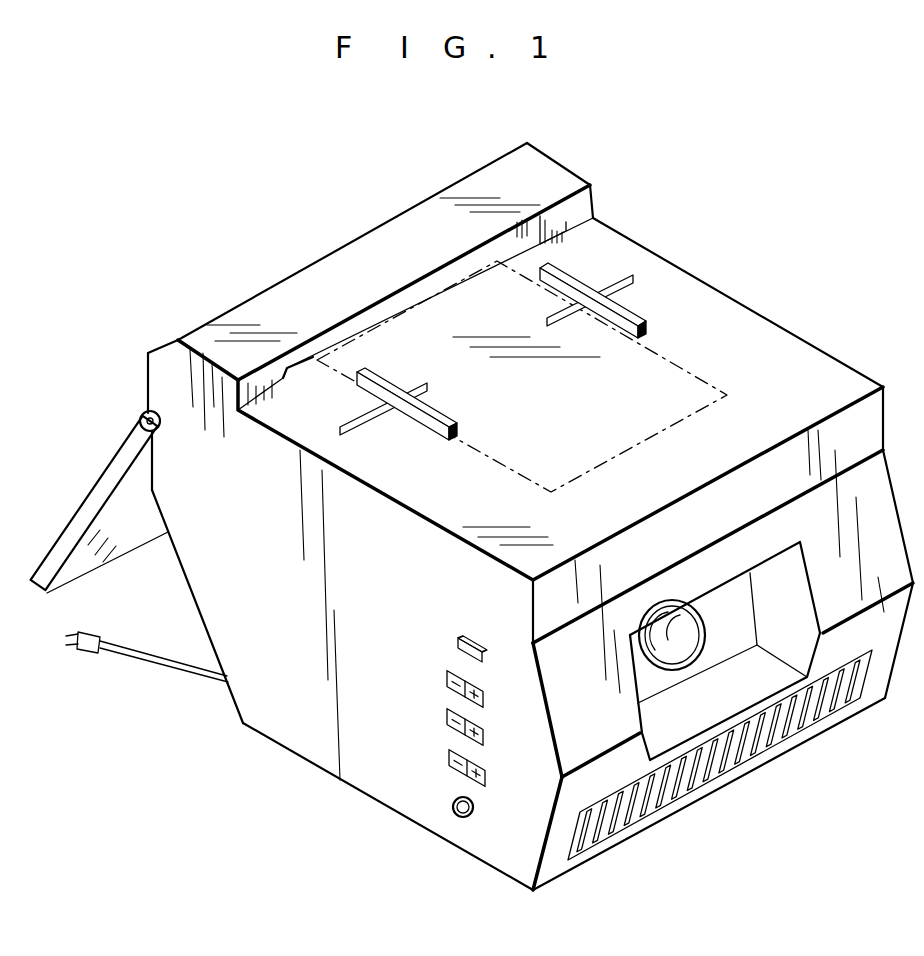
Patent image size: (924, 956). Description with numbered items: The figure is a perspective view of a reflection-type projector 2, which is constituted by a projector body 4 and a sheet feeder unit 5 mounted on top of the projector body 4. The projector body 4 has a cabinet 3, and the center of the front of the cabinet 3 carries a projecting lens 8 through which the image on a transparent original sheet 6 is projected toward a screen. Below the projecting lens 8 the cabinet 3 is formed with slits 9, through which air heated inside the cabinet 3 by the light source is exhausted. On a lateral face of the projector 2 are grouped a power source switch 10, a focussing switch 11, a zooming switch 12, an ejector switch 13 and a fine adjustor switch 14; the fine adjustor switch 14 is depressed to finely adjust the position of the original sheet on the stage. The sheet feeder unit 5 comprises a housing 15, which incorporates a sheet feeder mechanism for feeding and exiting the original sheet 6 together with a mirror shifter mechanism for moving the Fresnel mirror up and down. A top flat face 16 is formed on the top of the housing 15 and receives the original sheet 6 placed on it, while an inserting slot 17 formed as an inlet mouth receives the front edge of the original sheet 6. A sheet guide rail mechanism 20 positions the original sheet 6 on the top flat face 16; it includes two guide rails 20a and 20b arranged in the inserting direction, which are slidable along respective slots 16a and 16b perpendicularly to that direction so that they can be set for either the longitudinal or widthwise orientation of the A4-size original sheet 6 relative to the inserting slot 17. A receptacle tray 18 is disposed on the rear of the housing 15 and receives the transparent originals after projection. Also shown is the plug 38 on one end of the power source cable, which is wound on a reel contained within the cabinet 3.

The projector 2 is at (862, 352).
The cabinet 3 is at (472, 848).
The projector body 4 is at (270, 704).
The sheet feeder unit 5 is at (542, 188).
The original sheet 6 is at (742, 399).
The projecting lens 8 is at (685, 628).
The slits 9 is at (680, 790).
The power source switch 10 is at (455, 648).
The focussing switch 11 is at (450, 680).
The zooming switch 12 is at (448, 713).
The ejector switch 13 is at (450, 798).
The fine adjustor switch 14 is at (450, 753).
The housing 15 is at (328, 262).
The top flat face 16 is at (775, 340).
The slot 16a is at (607, 287).
The slot 16b is at (357, 433).
The inserting slot 17 is at (343, 350).
The receptacle tray 18 is at (83, 507).
The sheet guide rail mechanism 20 is at (650, 316).
The guide rail 20a is at (645, 312).
The guide rail 20b is at (437, 437).
The plug 38 is at (88, 652).